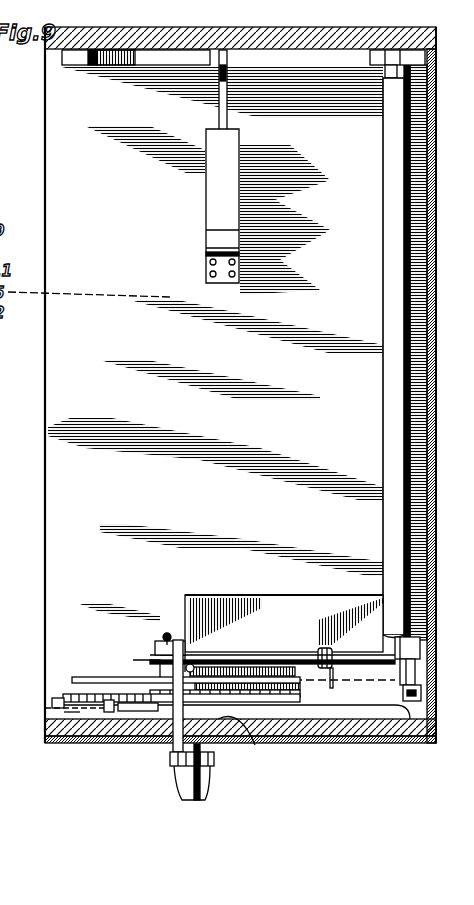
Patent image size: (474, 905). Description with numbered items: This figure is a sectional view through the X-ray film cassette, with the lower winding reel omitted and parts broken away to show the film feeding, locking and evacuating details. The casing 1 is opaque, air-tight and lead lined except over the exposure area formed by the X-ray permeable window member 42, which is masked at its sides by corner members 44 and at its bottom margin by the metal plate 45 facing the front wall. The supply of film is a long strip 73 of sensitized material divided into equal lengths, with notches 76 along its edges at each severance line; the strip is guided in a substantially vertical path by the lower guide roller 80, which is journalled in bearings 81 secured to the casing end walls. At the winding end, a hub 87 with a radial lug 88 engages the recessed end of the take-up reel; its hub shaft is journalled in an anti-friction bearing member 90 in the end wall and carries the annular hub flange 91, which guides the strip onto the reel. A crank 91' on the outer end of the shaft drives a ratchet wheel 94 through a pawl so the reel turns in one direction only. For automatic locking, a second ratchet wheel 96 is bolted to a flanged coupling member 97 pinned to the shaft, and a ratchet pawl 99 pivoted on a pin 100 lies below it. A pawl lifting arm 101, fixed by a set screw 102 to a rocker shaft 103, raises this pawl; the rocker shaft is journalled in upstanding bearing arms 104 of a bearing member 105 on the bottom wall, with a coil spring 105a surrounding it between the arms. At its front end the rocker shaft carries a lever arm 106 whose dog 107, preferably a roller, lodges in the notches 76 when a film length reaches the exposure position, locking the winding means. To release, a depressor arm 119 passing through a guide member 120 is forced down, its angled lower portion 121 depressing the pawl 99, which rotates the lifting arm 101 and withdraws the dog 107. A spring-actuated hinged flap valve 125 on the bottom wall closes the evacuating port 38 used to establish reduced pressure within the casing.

The casing 1 is at (335, 736).
The evacuating port 38 is at (285, 210).
The window member 42 is at (433, 486).
The corner members 44 is at (433, 80).
The metal plate 45 is at (437, 298).
The film strip 73 is at (432, 562).
The notches 76 is at (416, 670).
The lower guide roller 80 is at (384, 383).
The bearings 81 is at (428, 60).
The hub 87 is at (134, 661).
The lug 88 is at (195, 668).
The bearing member 90 is at (160, 742).
The hub flange 91 is at (183, 667).
The crank 91' is at (176, 775).
The ratchet wheel 94 is at (214, 760).
The ratchet wheel 96 is at (62, 697).
The coupling member 97 is at (258, 735).
The ratchet pawl 99 is at (52, 702).
The pin 100 is at (50, 710).
The pawl lifting arm 101 is at (156, 645).
The set screw 102 is at (167, 633).
The rocker shaft 103 is at (265, 656).
The bearing arms 104 is at (188, 597).
The bearing member 105 is at (245, 598).
The coil spring 105a is at (322, 652).
The lever arm 106 is at (420, 638).
The dog 107 is at (433, 693).
The depressor arm 119 is at (136, 742).
The guide member 120 is at (112, 742).
The angled lower portion 121 is at (66, 742).
The flap valve 125 is at (236, 205).